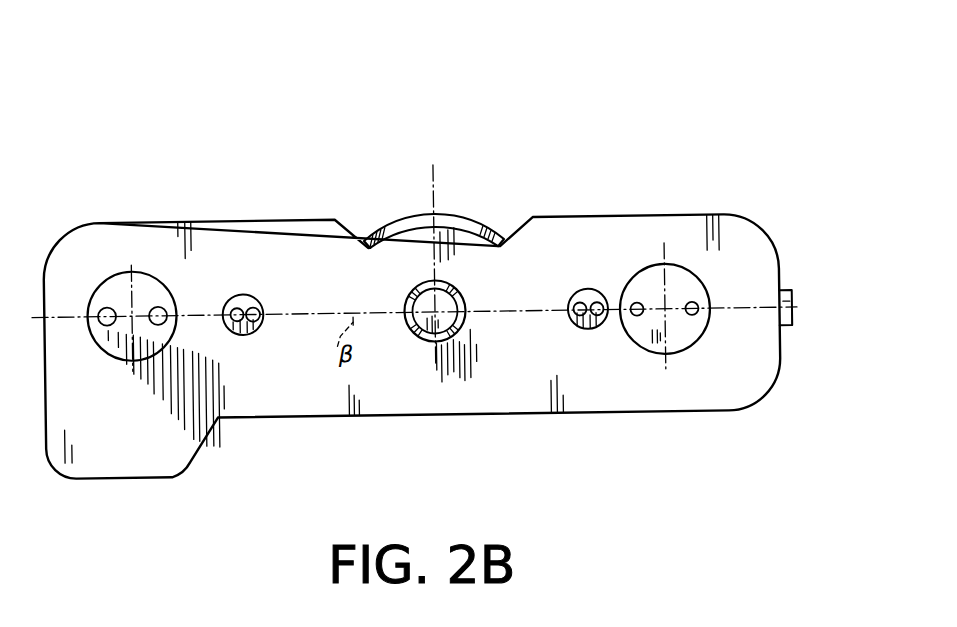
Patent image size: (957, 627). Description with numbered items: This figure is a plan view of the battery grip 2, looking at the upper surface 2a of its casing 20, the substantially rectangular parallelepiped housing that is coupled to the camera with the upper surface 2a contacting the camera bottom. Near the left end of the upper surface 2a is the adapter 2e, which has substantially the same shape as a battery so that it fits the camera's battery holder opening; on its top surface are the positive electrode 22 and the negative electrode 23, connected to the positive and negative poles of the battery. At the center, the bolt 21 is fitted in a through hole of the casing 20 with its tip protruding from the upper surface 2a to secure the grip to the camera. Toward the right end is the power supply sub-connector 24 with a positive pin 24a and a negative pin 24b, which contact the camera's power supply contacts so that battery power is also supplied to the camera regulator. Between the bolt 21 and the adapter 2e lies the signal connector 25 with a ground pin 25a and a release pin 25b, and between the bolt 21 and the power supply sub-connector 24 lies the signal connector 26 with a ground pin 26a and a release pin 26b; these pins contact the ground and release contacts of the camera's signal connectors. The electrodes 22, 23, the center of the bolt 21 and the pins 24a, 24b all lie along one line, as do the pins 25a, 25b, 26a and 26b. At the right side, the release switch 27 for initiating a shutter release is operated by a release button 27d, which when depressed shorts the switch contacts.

The battery grip 2 is at (665, 188).
The casing 20 is at (283, 190).
The upper surface 2a is at (360, 284).
The adapter 2e is at (117, 287).
The positive electrode 22 is at (104, 322).
The negative electrode 23 is at (164, 302).
The signal connector 25 is at (244, 297).
The ground pin 25a is at (237, 327).
The release pin 25b is at (259, 316).
The bolt 21 is at (414, 333).
The signal connector 26 is at (590, 299).
The ground pin 26a is at (590, 320).
The release pin 26b is at (578, 306).
The power supply sub-connector 24 is at (675, 286).
The positive pin 24a is at (696, 319).
The negative pin 24b is at (640, 322).
The release switch 27 is at (795, 332).
The release button 27d is at (828, 295).